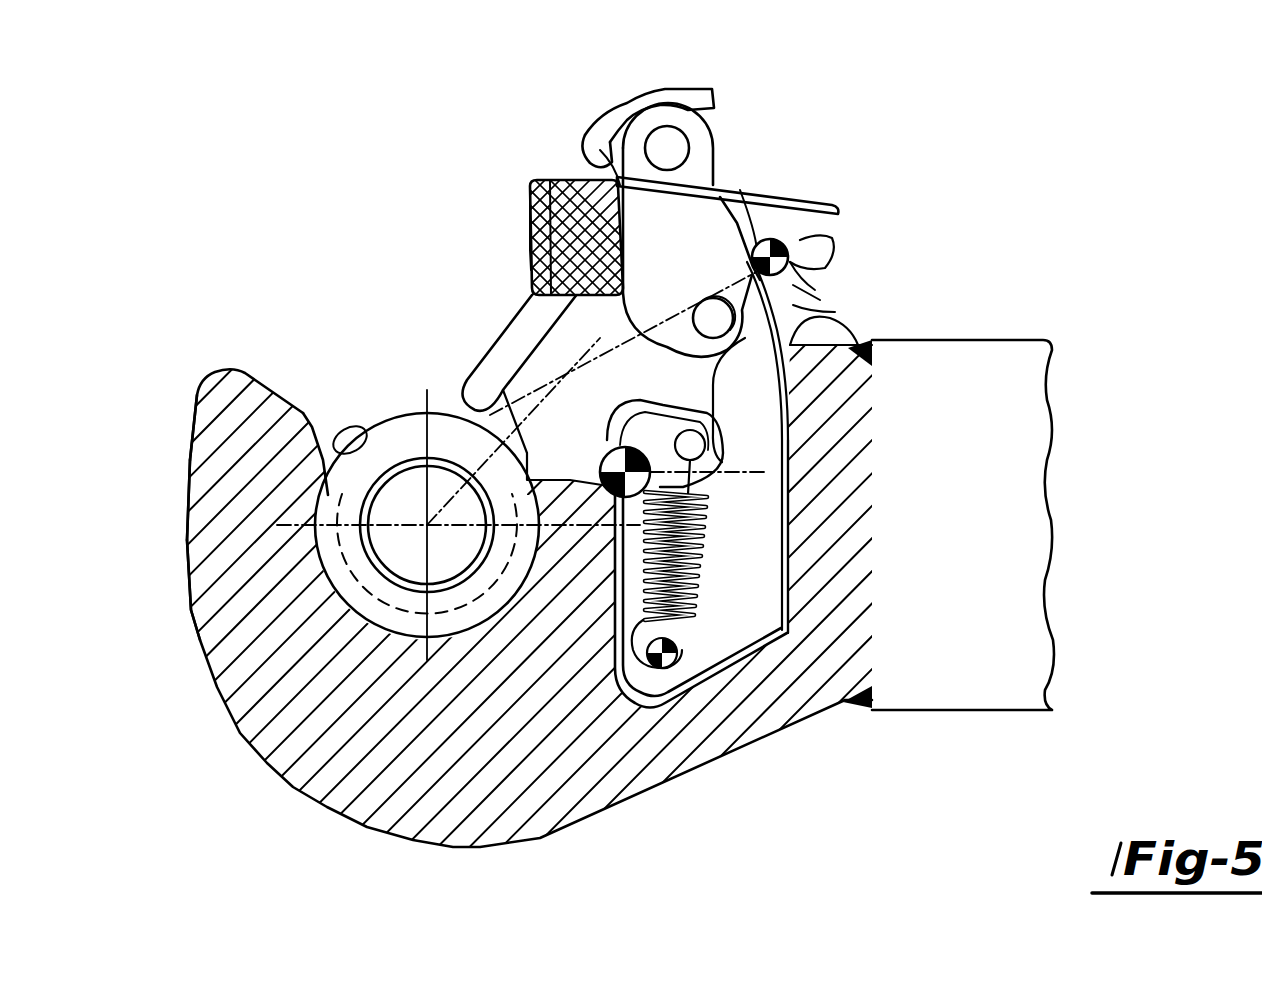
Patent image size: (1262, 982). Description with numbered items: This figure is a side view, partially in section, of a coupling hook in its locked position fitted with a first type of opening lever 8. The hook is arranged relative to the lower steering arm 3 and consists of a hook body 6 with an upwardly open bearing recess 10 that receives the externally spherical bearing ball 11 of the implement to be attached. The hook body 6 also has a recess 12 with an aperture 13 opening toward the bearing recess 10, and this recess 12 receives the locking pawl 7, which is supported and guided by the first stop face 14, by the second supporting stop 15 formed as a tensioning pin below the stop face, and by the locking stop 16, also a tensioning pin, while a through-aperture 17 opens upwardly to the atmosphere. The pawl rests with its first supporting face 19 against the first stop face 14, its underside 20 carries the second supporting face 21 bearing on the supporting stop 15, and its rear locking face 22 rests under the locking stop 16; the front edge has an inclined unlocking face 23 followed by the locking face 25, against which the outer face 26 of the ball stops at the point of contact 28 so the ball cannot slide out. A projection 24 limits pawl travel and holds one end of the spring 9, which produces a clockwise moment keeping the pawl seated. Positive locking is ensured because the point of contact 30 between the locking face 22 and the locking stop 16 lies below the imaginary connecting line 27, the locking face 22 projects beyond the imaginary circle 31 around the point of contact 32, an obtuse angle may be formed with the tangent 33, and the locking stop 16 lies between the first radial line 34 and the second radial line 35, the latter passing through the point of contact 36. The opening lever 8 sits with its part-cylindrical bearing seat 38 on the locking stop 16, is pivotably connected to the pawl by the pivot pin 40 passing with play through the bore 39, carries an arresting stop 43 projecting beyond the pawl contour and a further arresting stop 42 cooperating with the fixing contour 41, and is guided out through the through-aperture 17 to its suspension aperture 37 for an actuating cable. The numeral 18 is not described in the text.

The lower steering arm 3 is at (1012, 547).
The hook body 6 is at (358, 755).
The locking pawl 7 is at (470, 386).
The opening lever 8 is at (663, 247).
The spring 9 is at (783, 633).
The bearing recess 10 is at (348, 590).
The bearing ball 11 is at (350, 493).
The recess 12 is at (700, 617).
The aperture 13 is at (612, 500).
The first stop face 14 is at (540, 255).
The second supporting stop 15 is at (753, 588).
The locking stop 16 is at (803, 288).
The through-aperture 17 is at (815, 297).
The pawl block 18 is at (548, 180).
The first supporting face 19 is at (525, 285).
The underside 20 is at (598, 470).
The second supporting face 21 is at (700, 415).
The locking face 22 is at (793, 307).
The unlocking face 23 is at (520, 317).
The projection 24 is at (700, 497).
The locking face 25 is at (462, 400).
The outer face 26 is at (345, 472).
The connecting line 27 is at (563, 370).
The point of contact 28 is at (430, 428).
The point of contact 30 is at (793, 290).
The imaginary circle 31 is at (757, 250).
The point of contact 32 is at (530, 268).
The tangent 33 is at (807, 327).
The first radial line 34 is at (472, 376).
The second radial line 35 is at (700, 473).
The point of contact 36 is at (700, 440).
The suspension aperture 37 is at (705, 146).
The bearing seat 38 is at (780, 242).
The bore 39 is at (733, 340).
The pivot pin 40 is at (700, 363).
The fixing contour 41 is at (590, 126).
The arresting stop 42 is at (576, 182).
The arresting stop 43 is at (800, 340).